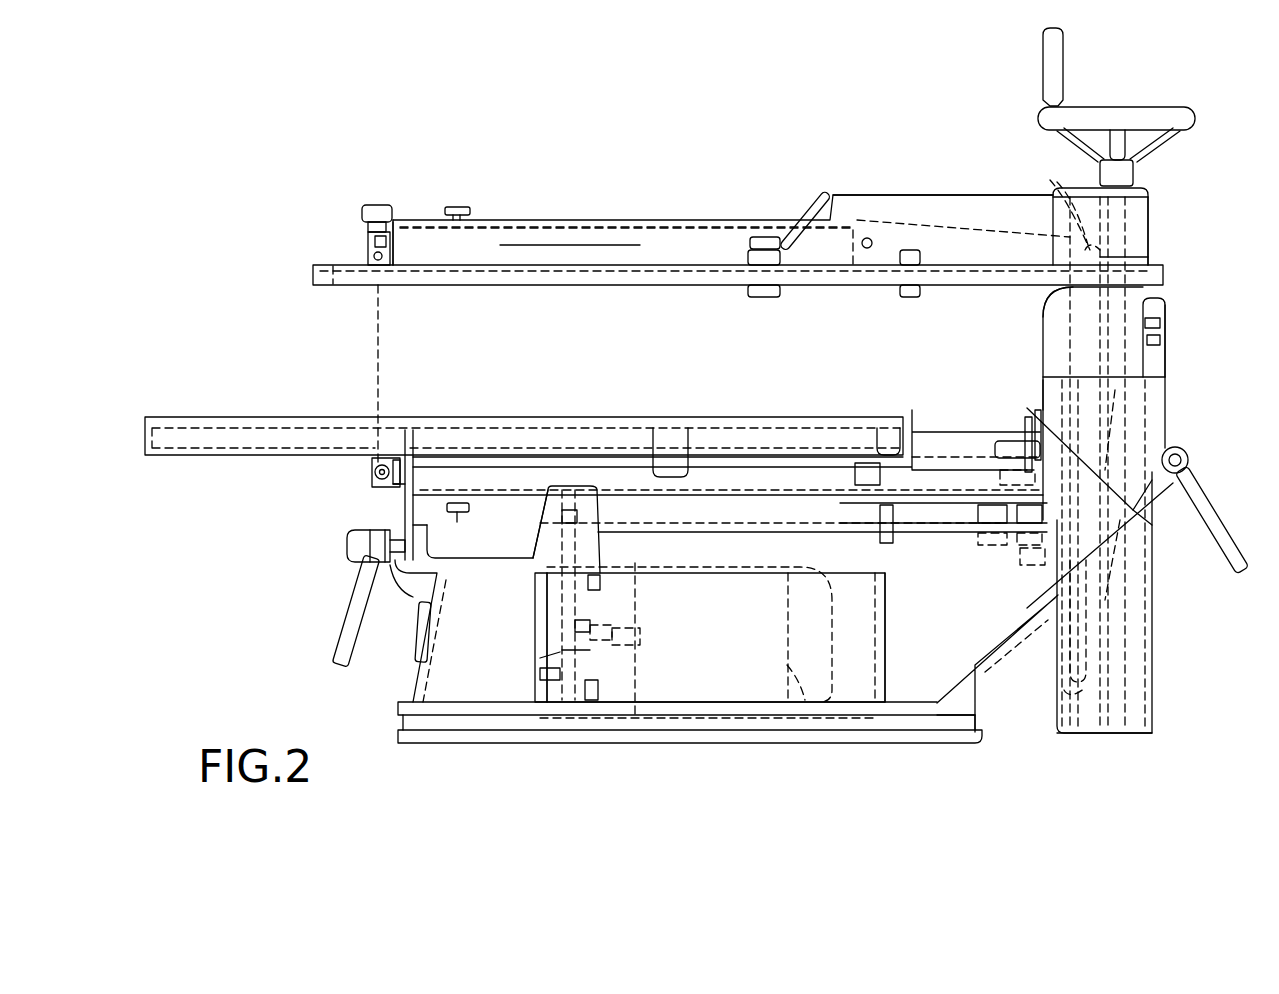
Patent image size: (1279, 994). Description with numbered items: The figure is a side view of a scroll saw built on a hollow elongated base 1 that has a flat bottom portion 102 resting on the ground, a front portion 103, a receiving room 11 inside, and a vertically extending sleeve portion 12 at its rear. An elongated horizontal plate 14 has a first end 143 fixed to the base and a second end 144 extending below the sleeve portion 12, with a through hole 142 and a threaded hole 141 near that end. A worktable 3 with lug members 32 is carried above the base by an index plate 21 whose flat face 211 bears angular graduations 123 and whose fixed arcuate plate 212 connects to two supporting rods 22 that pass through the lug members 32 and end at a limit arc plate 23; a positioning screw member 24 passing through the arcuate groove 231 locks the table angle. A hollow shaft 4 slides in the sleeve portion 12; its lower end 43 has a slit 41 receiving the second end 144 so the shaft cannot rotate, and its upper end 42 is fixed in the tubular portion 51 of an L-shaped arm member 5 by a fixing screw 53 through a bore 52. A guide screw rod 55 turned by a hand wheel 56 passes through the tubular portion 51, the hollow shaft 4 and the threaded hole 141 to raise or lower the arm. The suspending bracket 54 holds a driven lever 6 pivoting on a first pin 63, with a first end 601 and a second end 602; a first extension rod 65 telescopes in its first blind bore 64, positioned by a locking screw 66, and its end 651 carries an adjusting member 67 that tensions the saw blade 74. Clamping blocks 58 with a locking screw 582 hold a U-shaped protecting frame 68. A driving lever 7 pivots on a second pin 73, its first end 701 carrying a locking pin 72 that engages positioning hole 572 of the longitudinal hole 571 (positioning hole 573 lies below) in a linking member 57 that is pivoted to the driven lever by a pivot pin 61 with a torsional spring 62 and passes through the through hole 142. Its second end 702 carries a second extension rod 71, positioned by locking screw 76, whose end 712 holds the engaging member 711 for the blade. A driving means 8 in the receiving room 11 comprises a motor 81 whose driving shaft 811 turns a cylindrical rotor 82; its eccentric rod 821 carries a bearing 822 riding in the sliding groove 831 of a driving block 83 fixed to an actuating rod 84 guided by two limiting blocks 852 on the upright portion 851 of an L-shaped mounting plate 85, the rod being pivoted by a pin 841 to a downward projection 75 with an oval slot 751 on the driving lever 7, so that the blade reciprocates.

The base 1 is at (412, 682).
The worktable 3 is at (170, 420).
The hollow shaft 4 is at (1155, 620).
The L-shaped arm member 5 is at (1155, 197).
The driven lever 6 is at (943, 228).
The driving lever 7 is at (812, 450).
The driving means 8 is at (590, 710).
The receiving room 11 is at (862, 702).
The sleeve portion 12 is at (1167, 415).
The horizontal plate 14 is at (1000, 555).
The index plate 21 is at (1040, 380).
The supporting rods 22 is at (966, 470).
The limit arc plate 23 is at (418, 622).
The positioning screw member 24 is at (348, 615).
The lug members 32 is at (652, 450).
The slit 41 is at (1052, 640).
The upper end 42 is at (1160, 304).
The lower end 43 is at (1150, 733).
The tubular portion 51 is at (1150, 243).
The bore 52 is at (1165, 328).
The fixing screw 53 is at (1162, 342).
The suspending bracket 54 is at (983, 195).
The guide screw rod 55 is at (1128, 218).
The hand wheel 56 is at (1177, 107).
The linking member 57 is at (1115, 400).
The clamping blocks 58 is at (782, 292).
The pivot pin 61 is at (1150, 260).
The torsional spring 62 is at (1052, 177).
The first pin 63 is at (867, 238).
The first blind bore 64 is at (598, 222).
The first extension rod 65 is at (645, 245).
The locking screw 66 is at (466, 207).
The adjusting member 67 is at (378, 205).
The U-shaped protecting frame 68 is at (313, 272).
The second extension rod 71 is at (712, 460).
The locking pin 72 is at (1160, 515).
The second pin 73 is at (853, 478).
The saw blade 74 is at (378, 330).
The downward projection 75 is at (600, 505).
The locking screw 76 is at (462, 530).
The motor 81 is at (806, 702).
The cylindrical rotor 82 is at (592, 680).
The driving block 83 is at (560, 672).
The actuating rod 84 is at (560, 600).
The L-shaped mounting plate 85 is at (545, 658).
The flat bottom portion 102 is at (472, 743).
The front portion 103 is at (405, 522).
The angular graduations 123 is at (1043, 360).
The threaded hole 141 is at (1045, 585).
The through hole 142 is at (1032, 565).
The first end 143 is at (890, 545).
The second end 144 is at (1152, 568).
The flat face 211 is at (1035, 390).
The fixed arcuate plate 212 is at (1025, 425).
The arcuate groove 231 is at (395, 580).
The longitudinal hole 571 is at (1060, 675).
The positioning hole 572 is at (1032, 480).
The positioning hole 573 is at (1080, 690).
The locking screw 582 is at (758, 237).
The first end 601 is at (1062, 158).
The second end 602 is at (395, 235).
The end 651 is at (368, 240).
The first end 701 is at (1028, 402).
The second end 702 is at (390, 478).
The engaging member 711 is at (372, 472).
The end 712 is at (392, 484).
The oval slot 751 is at (600, 518).
The driving shaft 811 is at (625, 643).
The eccentric rod 821 is at (600, 640).
The bearing 822 is at (590, 575).
The sliding groove 831 is at (575, 628).
The pin 841 is at (560, 515).
The upright portion 851 is at (575, 647).
The limiting blocks 852 is at (672, 525).